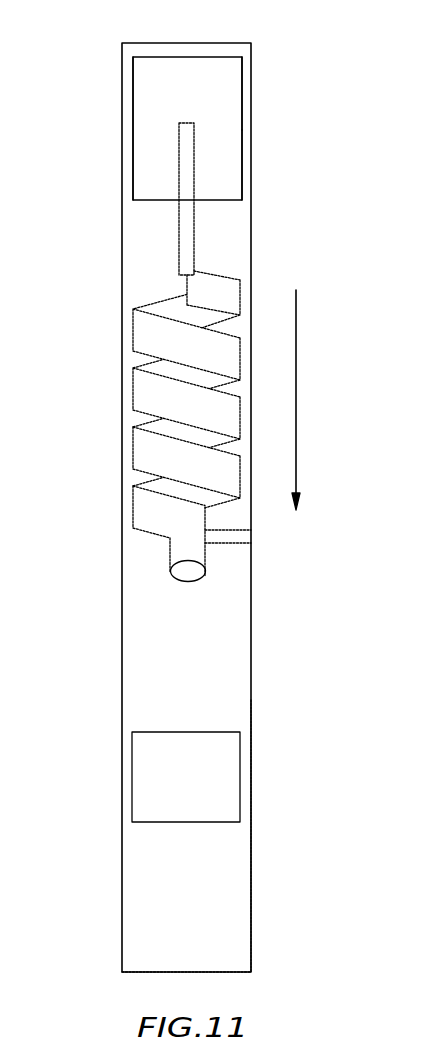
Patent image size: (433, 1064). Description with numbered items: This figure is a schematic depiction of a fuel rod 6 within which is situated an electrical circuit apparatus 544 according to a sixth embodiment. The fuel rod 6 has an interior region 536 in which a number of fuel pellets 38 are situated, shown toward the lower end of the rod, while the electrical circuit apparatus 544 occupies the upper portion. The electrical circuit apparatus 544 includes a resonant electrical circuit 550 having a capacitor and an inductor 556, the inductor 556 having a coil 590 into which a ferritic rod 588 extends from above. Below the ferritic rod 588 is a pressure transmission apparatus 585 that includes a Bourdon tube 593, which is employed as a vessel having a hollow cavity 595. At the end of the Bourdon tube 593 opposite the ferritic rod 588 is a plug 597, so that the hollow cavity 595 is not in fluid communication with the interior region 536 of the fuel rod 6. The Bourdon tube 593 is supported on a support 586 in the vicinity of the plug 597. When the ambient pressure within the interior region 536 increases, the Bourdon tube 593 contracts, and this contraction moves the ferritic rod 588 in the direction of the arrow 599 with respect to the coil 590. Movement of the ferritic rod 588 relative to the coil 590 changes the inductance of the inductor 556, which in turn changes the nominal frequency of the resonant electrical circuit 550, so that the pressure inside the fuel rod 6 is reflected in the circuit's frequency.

The fuel rod 6 is at (104, 874).
The fuel pellets 38 is at (197, 822).
The interior region 536 is at (225, 920).
The electrical circuit apparatus 544 is at (256, 158).
The resonant electrical circuit 550 is at (256, 100).
The inductor 556 is at (242, 67).
The pressure transmission apparatus 585 is at (112, 380).
The support 586 is at (225, 543).
The ferritic rod 588 is at (179, 248).
The coil 590 is at (133, 122).
The Bourdon tube 593 is at (116, 444).
The hollow cavity 595 is at (140, 511).
The plug 597 is at (189, 575).
The arrow 599 is at (296, 358).